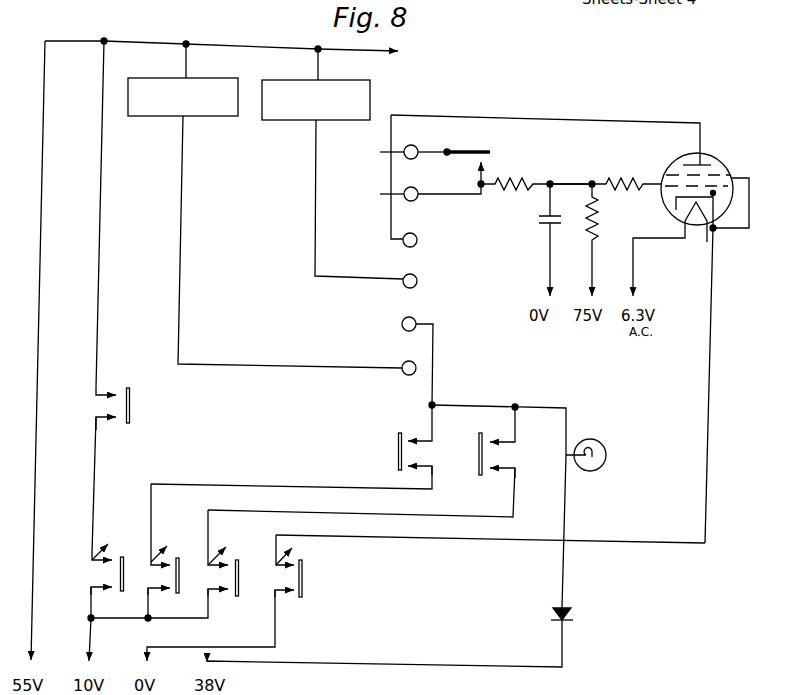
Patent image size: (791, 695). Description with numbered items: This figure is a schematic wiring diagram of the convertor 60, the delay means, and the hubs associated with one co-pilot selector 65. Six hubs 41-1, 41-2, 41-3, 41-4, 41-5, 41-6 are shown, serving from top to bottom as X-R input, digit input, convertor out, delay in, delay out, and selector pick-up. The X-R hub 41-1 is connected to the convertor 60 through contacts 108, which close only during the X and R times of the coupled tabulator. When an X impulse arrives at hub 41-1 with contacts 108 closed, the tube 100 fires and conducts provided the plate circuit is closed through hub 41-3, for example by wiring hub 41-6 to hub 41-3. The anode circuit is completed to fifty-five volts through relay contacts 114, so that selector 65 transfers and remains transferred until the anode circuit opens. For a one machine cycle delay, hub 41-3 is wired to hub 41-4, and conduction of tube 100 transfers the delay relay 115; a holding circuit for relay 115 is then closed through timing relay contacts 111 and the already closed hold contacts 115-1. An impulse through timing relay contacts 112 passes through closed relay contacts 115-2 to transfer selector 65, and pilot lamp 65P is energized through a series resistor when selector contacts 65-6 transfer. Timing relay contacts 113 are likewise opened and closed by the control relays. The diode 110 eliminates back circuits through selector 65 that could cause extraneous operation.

The co-pilot selector 65 is at (207, 85).
The delay relay 115 is at (370, 94).
The X-R input hub 41-1 is at (377, 153).
The digit input hub 41-2 is at (376, 194).
The convertor out hub 41-3 is at (403, 245).
The delay in hub 41-4 is at (402, 287).
The delay out hub 41-5 is at (402, 327).
The selector pick-up hub 41-6 is at (402, 374).
The contacts 108 is at (474, 150).
The convertor 60 is at (579, 172).
The tube 100 is at (738, 140).
The hold contacts 115-1 is at (130, 406).
The relay contacts 115-2 is at (396, 452).
The selector contacts 65-6 is at (477, 456).
The pilot lamp 65P is at (602, 467).
The timing relay contacts 111 is at (118, 578).
The timing relay contacts 112 is at (175, 576).
The timing relay contacts 113 is at (234, 578).
The relay contacts 114 is at (303, 580).
The diode 110 is at (573, 616).